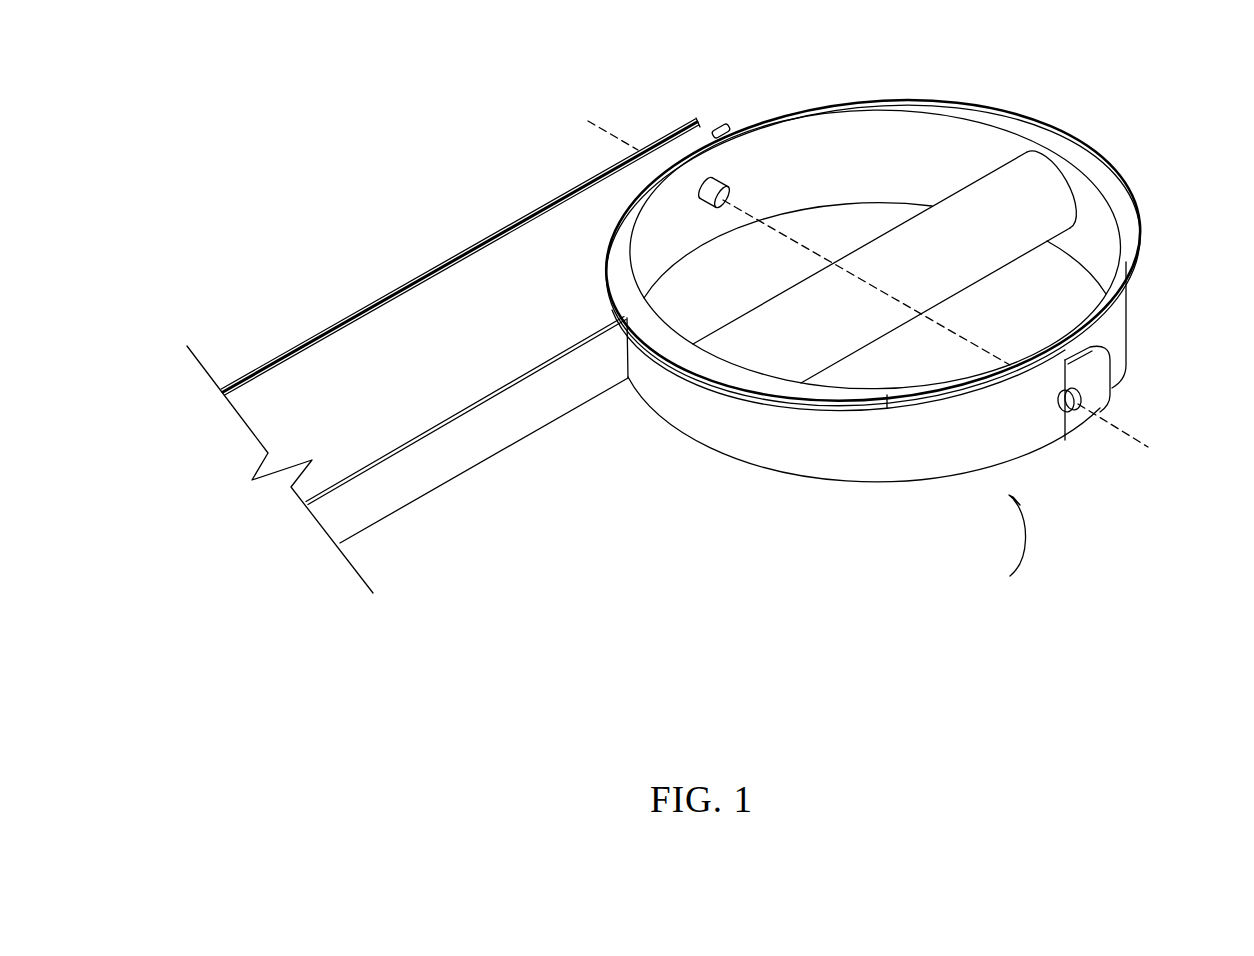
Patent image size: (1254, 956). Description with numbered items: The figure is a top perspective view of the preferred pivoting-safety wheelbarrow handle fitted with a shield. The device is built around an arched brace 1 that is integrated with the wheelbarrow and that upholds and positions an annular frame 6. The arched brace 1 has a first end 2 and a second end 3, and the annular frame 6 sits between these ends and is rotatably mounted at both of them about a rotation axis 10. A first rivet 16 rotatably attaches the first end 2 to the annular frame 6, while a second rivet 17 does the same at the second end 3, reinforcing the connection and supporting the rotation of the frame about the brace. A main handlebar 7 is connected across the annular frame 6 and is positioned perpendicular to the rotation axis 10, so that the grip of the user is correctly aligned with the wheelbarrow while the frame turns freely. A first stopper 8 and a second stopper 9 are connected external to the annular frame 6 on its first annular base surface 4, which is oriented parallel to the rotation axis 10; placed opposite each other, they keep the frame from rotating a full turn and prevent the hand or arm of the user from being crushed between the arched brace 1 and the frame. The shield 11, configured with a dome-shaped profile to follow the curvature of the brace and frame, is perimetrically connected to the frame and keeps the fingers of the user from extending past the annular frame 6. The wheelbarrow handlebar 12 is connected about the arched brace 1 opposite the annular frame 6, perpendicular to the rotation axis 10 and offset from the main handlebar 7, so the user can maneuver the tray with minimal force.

The arched brace 1 is at (1014, 500).
The first end 2 is at (1100, 400).
The second end 3 is at (712, 128).
The first annular base surface 4 is at (1118, 286).
The annular frame 6 is at (975, 128).
The main handlebar 7 is at (970, 268).
The first stopper 8 is at (742, 388).
The second stopper 9 is at (1112, 182).
The rotation axis 10 is at (1148, 434).
The shield 11 is at (848, 222).
The wheelbarrow handlebar 12 is at (447, 270).
The first rivet 16 is at (1076, 410).
The second rivet 17 is at (725, 172).